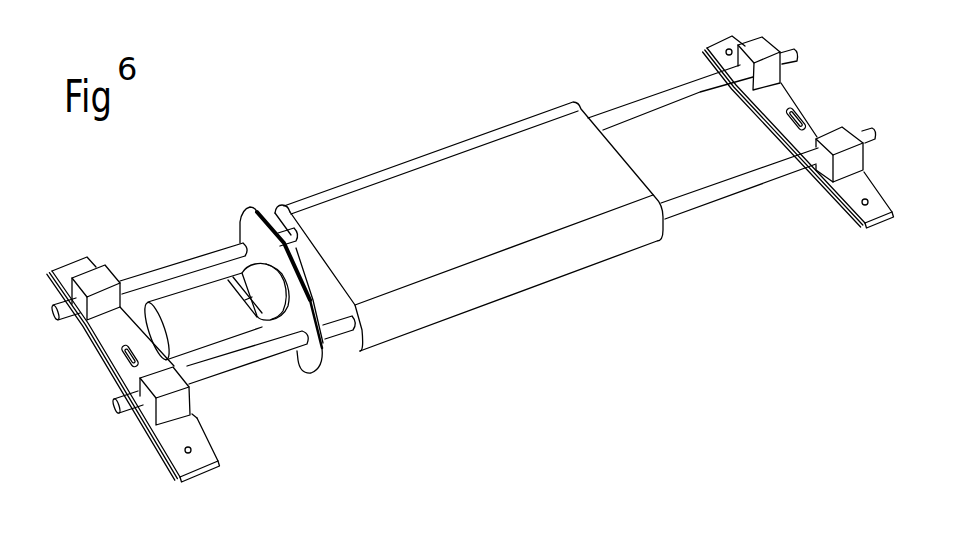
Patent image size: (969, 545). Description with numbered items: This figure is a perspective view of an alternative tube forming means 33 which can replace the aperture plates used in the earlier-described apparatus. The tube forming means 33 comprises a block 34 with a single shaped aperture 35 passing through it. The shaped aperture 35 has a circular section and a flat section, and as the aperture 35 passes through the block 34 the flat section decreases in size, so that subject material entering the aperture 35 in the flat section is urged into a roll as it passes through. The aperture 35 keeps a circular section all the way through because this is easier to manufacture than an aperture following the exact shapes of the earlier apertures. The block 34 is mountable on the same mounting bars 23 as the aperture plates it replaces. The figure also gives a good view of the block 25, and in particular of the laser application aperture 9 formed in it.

The laser application aperture 9 is at (243, 275).
The mounting bars 23 is at (642, 103).
The block 25 is at (165, 299).
The tube forming means 33 is at (469, 221).
The block 34 is at (428, 156).
The shaped aperture 35 is at (315, 276).